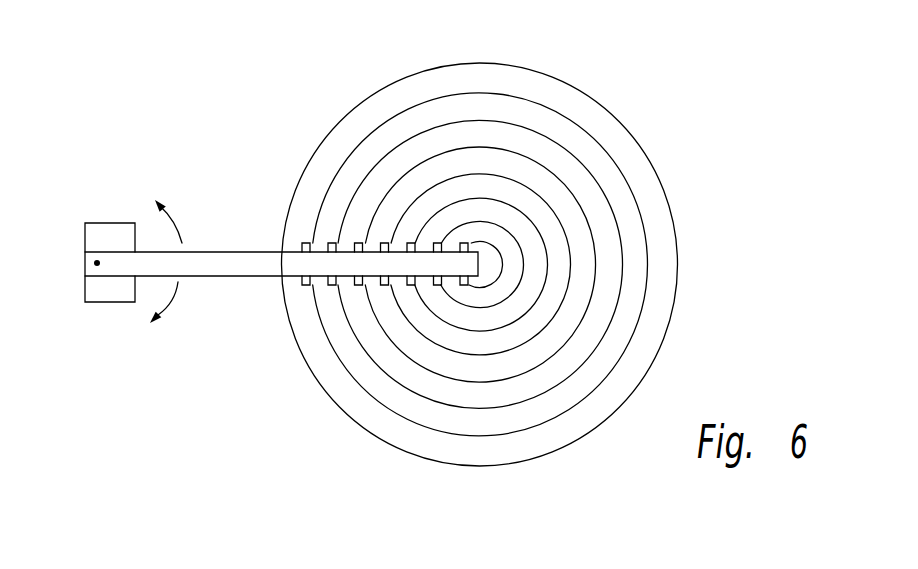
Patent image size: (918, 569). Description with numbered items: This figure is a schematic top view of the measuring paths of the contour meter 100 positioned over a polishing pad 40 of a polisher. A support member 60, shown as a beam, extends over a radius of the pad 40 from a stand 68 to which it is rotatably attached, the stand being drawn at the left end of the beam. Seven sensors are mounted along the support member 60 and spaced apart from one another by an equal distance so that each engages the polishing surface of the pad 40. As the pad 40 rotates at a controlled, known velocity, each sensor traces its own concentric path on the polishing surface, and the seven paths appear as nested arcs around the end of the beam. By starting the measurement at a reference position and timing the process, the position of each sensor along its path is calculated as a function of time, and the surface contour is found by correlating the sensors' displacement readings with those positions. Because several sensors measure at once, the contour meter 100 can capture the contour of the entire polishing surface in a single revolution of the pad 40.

The contour meter 100 is at (176, 403).
The stand 68 is at (110, 289).
The support member 60 is at (210, 266).
The polishing pad 40 is at (662, 249).